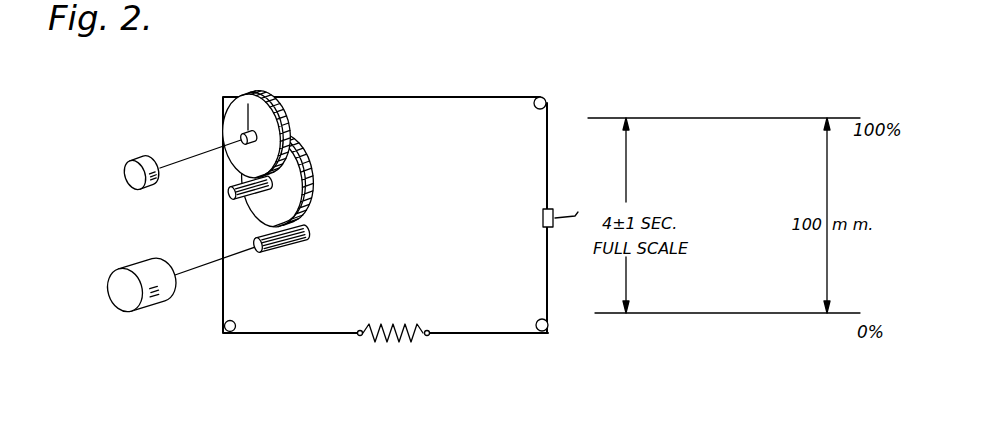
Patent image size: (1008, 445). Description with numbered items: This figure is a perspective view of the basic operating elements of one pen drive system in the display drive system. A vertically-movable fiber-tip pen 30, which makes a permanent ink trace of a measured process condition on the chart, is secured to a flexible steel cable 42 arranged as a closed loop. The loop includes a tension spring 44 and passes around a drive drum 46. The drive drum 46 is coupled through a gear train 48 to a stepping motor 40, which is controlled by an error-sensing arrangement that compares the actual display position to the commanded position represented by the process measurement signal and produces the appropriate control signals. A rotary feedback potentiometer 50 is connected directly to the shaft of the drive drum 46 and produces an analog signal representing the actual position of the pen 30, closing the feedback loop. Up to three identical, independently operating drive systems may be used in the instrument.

The pen 30 is at (553, 212).
The stepping motor 40 is at (102, 282).
The flexible steel cable 42 is at (455, 94).
The tension spring 44 is at (402, 343).
The drive drum 46 is at (238, 113).
The gear train 48 is at (322, 154).
The rotary feedback potentiometer 50 is at (140, 160).